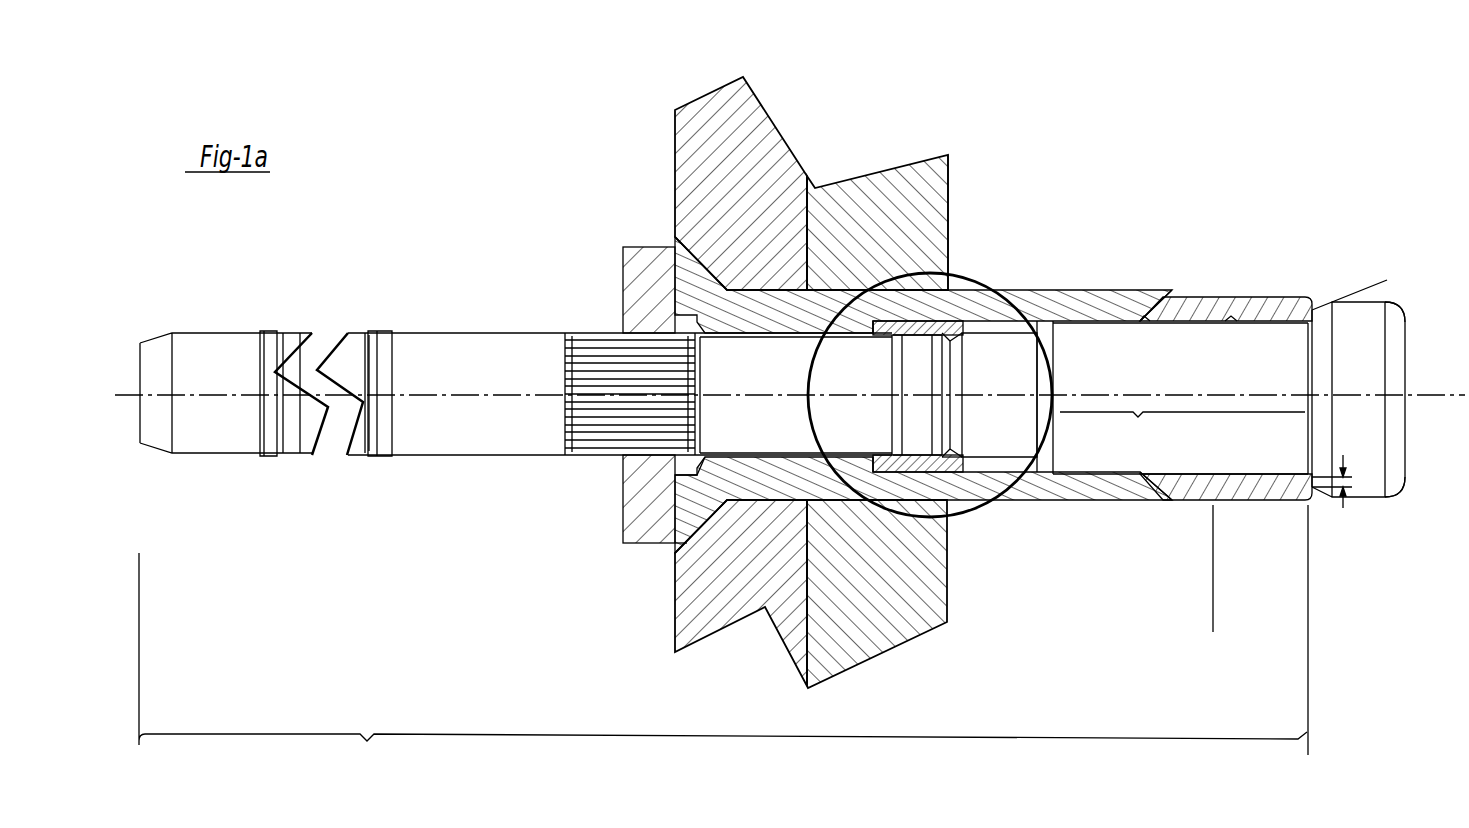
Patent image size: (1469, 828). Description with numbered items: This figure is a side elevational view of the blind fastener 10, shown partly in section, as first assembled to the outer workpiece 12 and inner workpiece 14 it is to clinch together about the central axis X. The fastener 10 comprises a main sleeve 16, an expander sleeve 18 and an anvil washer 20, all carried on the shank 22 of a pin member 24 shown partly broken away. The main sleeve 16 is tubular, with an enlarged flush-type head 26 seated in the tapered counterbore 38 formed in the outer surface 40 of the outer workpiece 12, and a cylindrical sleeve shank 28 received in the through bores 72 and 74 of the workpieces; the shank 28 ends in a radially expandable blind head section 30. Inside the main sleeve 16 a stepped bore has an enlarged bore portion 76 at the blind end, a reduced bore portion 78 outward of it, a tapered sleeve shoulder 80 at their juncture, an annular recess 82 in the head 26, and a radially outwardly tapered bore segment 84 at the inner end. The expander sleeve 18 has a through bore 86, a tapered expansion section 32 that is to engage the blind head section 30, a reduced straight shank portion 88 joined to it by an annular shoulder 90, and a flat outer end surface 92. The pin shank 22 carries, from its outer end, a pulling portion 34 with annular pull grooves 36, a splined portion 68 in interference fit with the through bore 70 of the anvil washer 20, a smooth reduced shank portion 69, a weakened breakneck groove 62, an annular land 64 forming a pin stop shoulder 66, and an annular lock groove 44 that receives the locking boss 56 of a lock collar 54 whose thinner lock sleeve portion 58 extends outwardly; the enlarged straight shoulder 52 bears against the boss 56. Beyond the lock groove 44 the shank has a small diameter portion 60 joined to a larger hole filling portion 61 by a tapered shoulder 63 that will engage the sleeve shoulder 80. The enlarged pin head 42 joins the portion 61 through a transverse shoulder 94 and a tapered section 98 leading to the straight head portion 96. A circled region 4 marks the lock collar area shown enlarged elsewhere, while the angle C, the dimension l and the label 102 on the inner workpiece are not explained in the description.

The bushing joint region 4 is at (982, 270).
The fastener 10 is at (511, 518).
The outer workpiece 12 is at (703, 105).
The inner workpiece 14 is at (900, 180).
The main sleeve 16 is at (1082, 513).
The expander sleeve 18 is at (1252, 524).
The anvil washer 20 is at (612, 232).
The pin shank 22 is at (723, 663).
The pin member 24 is at (475, 318).
The enlarged head 26 is at (688, 535).
The cylindrical sleeve shank 28 is at (808, 312).
The blind head section 30 is at (1170, 271).
The tapered expansion section 32 is at (1222, 469).
The pulling portion 34 is at (390, 316).
The annular pull grooves 36 is at (363, 373).
The tapered counterbore 38 is at (700, 268).
The outer surface 40 is at (680, 622).
The enlarged pin head 42 is at (1386, 291).
The annular lock groove 44 is at (948, 416).
The pin shank shoulder 52 is at (962, 368).
The lock collar 54 is at (961, 477).
The locking boss 56 is at (950, 342).
The lock sleeve portion 58 is at (912, 332).
The first small diameter portion 60 is at (1035, 432).
The hole filling second portion 61 is at (1182, 429).
The breakneck groove 62 is at (893, 357).
The tapered shoulder 63 is at (1054, 340).
The annular land 64 is at (908, 370).
The pin stop shoulder 66 is at (895, 417).
The splined portion 68 is at (590, 334).
The smooth shank portion 69 is at (727, 384).
The through bore 70 is at (658, 338).
The through bore 72 is at (747, 293).
The through bore 74 is at (838, 490).
The enlarged bore portion 76 is at (1015, 456).
The reduced diameter bore portion 78 is at (737, 472).
The tapered sleeve shoulder 80 is at (913, 500).
The annular counterbore 82 is at (680, 490).
The tapered bore segment 84 is at (1153, 328).
The through bore 86 is at (1227, 327).
The straight shank portion 88 is at (1308, 626).
The annular shoulder 90 is at (1175, 322).
The outer end surface 92 is at (1313, 310).
The shoulder 94 is at (1313, 452).
The head portion 96 is at (1367, 497).
The tapered section 98 is at (1328, 345).
The gear outer face 102 is at (948, 170).
The cone angle C is at (1370, 312).
The gap length l is at (1340, 497).
The central axis X is at (118, 400).